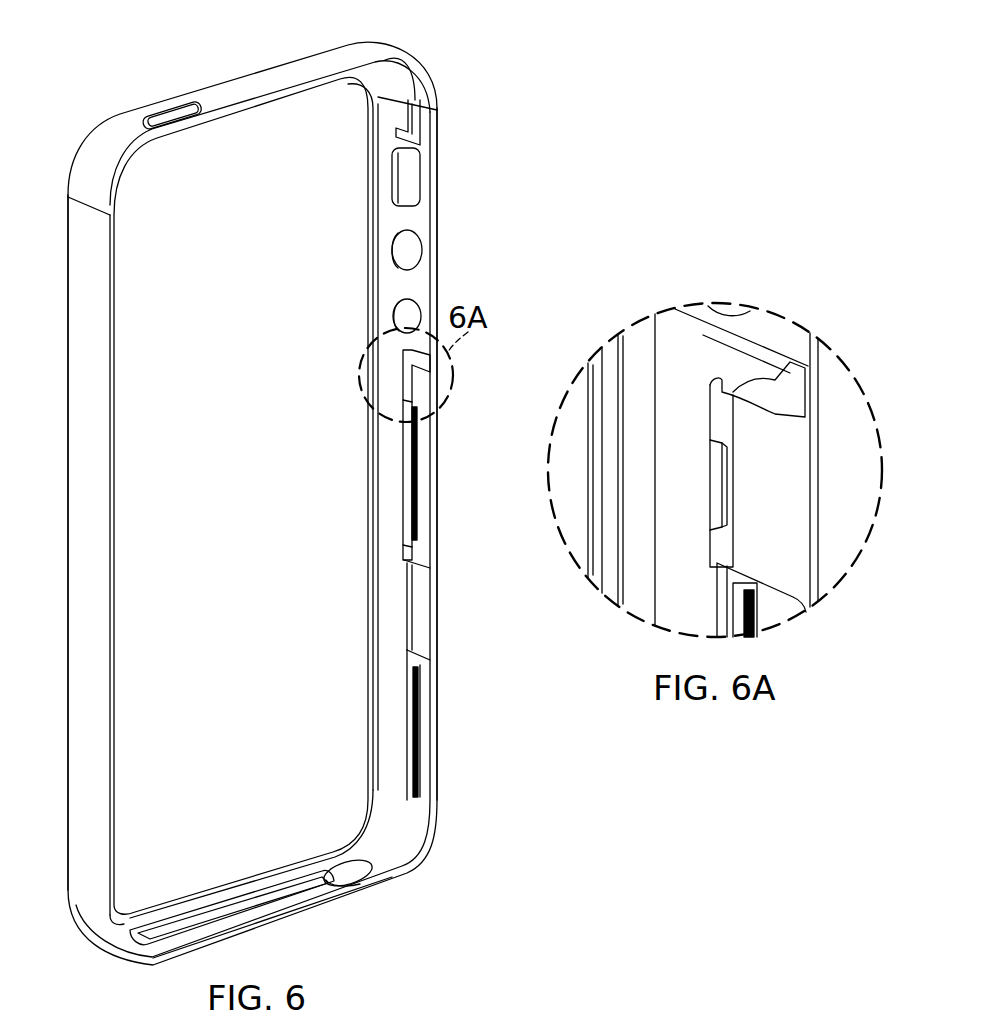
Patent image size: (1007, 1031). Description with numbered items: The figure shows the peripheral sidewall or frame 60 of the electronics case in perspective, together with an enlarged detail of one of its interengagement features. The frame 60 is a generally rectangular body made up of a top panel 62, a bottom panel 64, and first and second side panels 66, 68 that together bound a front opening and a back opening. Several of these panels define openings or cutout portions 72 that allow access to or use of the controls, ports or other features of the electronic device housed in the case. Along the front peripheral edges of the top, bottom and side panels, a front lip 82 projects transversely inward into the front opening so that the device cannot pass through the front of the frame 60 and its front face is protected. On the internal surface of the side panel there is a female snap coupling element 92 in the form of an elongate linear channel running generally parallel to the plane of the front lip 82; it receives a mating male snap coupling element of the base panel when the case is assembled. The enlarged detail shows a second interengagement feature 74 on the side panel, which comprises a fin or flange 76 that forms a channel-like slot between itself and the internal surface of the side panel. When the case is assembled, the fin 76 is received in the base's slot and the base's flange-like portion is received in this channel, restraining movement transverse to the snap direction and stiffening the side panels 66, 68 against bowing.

In FIG. 6, the frame 60 is at (107, 93).
In FIG. 6, the top panel 62 is at (272, 75).
In FIG. 6, the bottom panel 64 is at (293, 920).
In FIG. 6, the first side panel 66 is at (437, 482).
In FIG. 6, the second side panel 68 is at (87, 880).
In FIG. 6, the openings or cutout portions 72 is at (165, 116).
In FIG. 6, the second interengagement feature 74 is at (436, 593).
In FIG. 6A, the second interengagement feature 74 is at (827, 408).
In FIG. 6, the fin or flange 76 is at (416, 455).
In FIG. 6A, the fin or flange 76 is at (723, 503).
In FIG. 6, the front lip 82 is at (368, 538).
In FIG. 6, the female snap coupling element 92 is at (418, 748).
In FIG. 6A, the female snap coupling element 92 is at (750, 628).